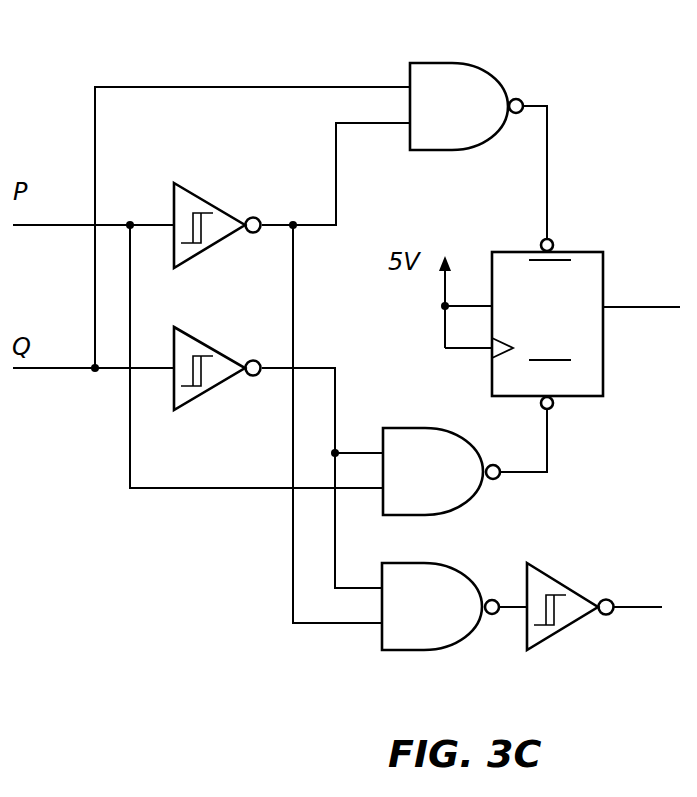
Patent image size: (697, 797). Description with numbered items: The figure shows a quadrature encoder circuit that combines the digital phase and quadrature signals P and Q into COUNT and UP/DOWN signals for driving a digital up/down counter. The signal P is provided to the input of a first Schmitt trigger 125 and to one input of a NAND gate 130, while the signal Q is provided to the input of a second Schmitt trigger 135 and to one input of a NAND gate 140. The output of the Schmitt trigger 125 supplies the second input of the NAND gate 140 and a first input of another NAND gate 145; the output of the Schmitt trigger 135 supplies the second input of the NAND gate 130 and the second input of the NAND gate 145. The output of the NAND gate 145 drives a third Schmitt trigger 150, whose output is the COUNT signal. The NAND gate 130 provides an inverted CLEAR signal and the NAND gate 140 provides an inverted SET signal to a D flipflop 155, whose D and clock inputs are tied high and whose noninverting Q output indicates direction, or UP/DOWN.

The first Schmitt trigger 125 is at (202, 200).
The second Schmitt trigger 135 is at (206, 350).
The NAND gate 140 is at (486, 88).
The NAND gate 130 is at (412, 428).
The NAND gate 145 is at (430, 570).
The third Schmitt trigger 150 is at (565, 586).
The D flipflop 155 is at (603, 368).